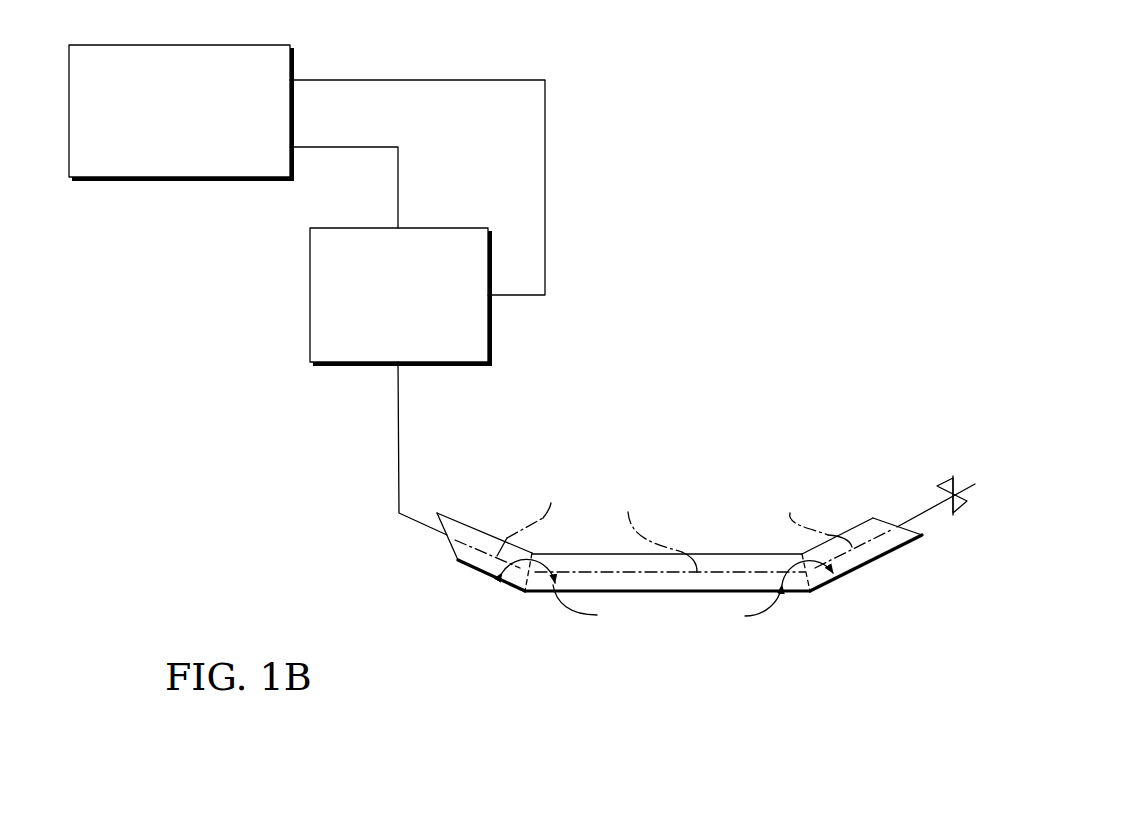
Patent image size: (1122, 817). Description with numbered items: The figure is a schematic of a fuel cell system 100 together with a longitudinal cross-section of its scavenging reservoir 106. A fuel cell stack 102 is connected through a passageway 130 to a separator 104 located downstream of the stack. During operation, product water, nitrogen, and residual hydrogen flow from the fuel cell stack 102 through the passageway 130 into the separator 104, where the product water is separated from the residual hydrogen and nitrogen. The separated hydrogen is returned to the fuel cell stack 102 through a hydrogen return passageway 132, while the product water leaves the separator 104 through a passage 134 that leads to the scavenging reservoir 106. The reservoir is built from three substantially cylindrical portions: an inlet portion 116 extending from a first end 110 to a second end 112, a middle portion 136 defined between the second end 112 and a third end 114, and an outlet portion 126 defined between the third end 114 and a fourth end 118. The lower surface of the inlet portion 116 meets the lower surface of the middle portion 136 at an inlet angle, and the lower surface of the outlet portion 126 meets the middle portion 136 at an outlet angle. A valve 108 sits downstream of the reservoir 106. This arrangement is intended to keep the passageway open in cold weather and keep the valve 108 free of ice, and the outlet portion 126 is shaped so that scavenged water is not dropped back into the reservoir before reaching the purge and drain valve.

The fuel cell system 100 is at (235, 425).
The fuel cell stack 102 is at (181, 113).
The separator 104 is at (401, 297).
The scavenging reservoir 106 is at (656, 537).
The valve 108 is at (945, 476).
The first end 110 is at (440, 537).
The second end 112 is at (527, 592).
The third end 114 is at (812, 593).
The inlet portion 116 is at (473, 527).
The fourth end 118 is at (898, 525).
The outlet portion 126 is at (870, 562).
The passageway 130 is at (398, 190).
The hydrogen return passageway 132 is at (545, 190).
The passage 134 is at (399, 458).
The middle portion 136 is at (643, 593).